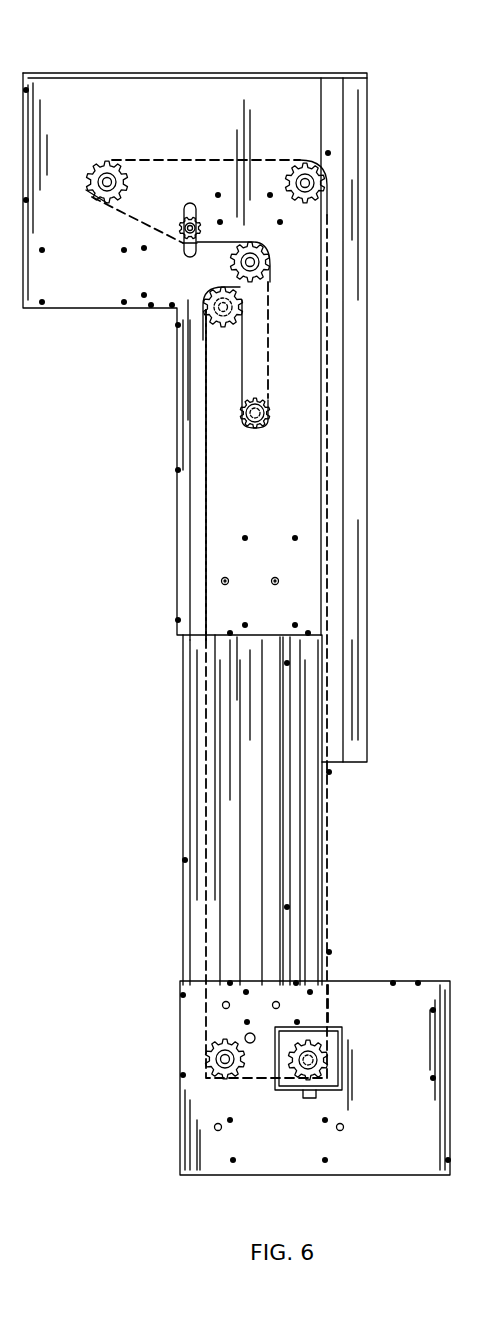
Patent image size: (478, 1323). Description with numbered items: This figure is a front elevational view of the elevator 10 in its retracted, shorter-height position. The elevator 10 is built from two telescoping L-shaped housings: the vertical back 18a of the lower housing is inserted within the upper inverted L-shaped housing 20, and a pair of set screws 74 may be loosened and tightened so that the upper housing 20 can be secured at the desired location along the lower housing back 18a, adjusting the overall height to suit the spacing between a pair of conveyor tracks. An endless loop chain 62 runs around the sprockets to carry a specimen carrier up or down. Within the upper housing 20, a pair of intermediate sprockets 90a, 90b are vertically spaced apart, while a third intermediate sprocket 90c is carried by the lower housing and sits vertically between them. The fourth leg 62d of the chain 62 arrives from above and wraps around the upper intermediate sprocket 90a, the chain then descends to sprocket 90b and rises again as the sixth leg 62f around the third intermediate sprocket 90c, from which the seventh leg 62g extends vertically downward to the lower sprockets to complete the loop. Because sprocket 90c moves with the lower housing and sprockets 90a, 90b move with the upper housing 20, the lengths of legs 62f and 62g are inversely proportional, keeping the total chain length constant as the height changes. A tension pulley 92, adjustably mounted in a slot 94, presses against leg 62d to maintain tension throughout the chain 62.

The elevator 10 is at (418, 425).
The vertical back of lower housing 18a is at (253, 860).
The upper inverted L-shaped housing 20 is at (148, 362).
The endless loop chain 62 is at (328, 437).
The fourth leg of chain 62d is at (135, 215).
The sixth leg of chain 62f is at (242, 385).
The seventh leg of chain 62g is at (205, 455).
The set screws 74 is at (272, 582).
The upper intermediate sprocket 90a is at (268, 262).
The lower intermediate sprocket 90b is at (257, 398).
The third intermediate sprocket 90c is at (205, 318).
The tension pulley 92 is at (200, 230).
The slot 94 is at (188, 205).